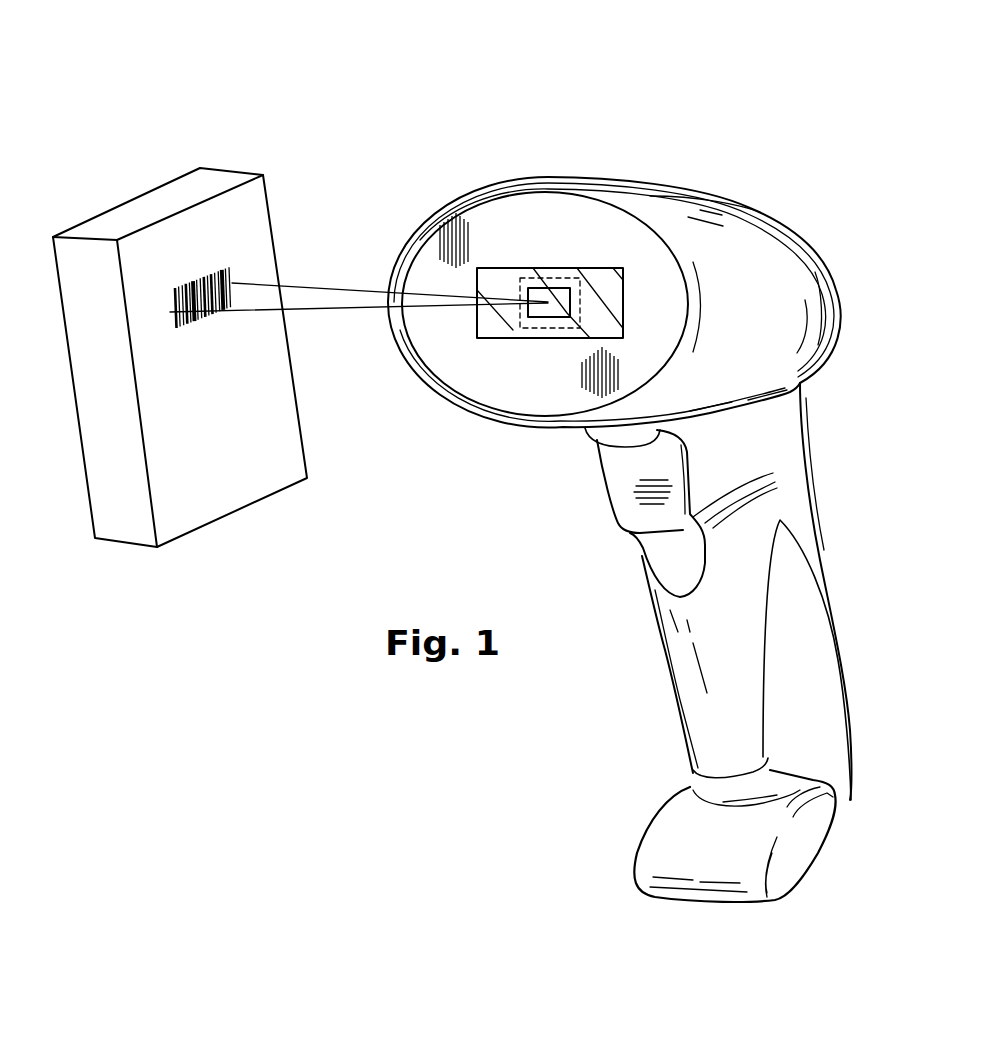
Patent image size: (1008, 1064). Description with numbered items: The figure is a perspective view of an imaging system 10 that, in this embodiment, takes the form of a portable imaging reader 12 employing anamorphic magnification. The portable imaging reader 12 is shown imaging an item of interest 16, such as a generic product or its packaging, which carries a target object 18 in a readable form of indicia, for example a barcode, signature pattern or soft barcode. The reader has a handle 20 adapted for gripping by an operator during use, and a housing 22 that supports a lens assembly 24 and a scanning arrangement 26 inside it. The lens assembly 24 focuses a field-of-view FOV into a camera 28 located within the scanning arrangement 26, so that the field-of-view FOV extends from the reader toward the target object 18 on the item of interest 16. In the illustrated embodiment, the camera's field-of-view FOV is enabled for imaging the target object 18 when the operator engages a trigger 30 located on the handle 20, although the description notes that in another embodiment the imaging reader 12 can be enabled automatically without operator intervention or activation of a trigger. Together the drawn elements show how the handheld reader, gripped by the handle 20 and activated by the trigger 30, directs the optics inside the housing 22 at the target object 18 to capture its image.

The imaging system 10 is at (518, 100).
The portable imaging reader 12 is at (740, 185).
The item of interest 16 is at (290, 180).
The target object 18 is at (232, 276).
The handle 20 is at (818, 660).
The housing 22 is at (810, 273).
The lens assembly 24 is at (583, 306).
The scanning arrangement 26 is at (646, 294).
The camera 28 is at (548, 320).
The trigger 30 is at (630, 492).
The field-of-view FOV is at (320, 310).